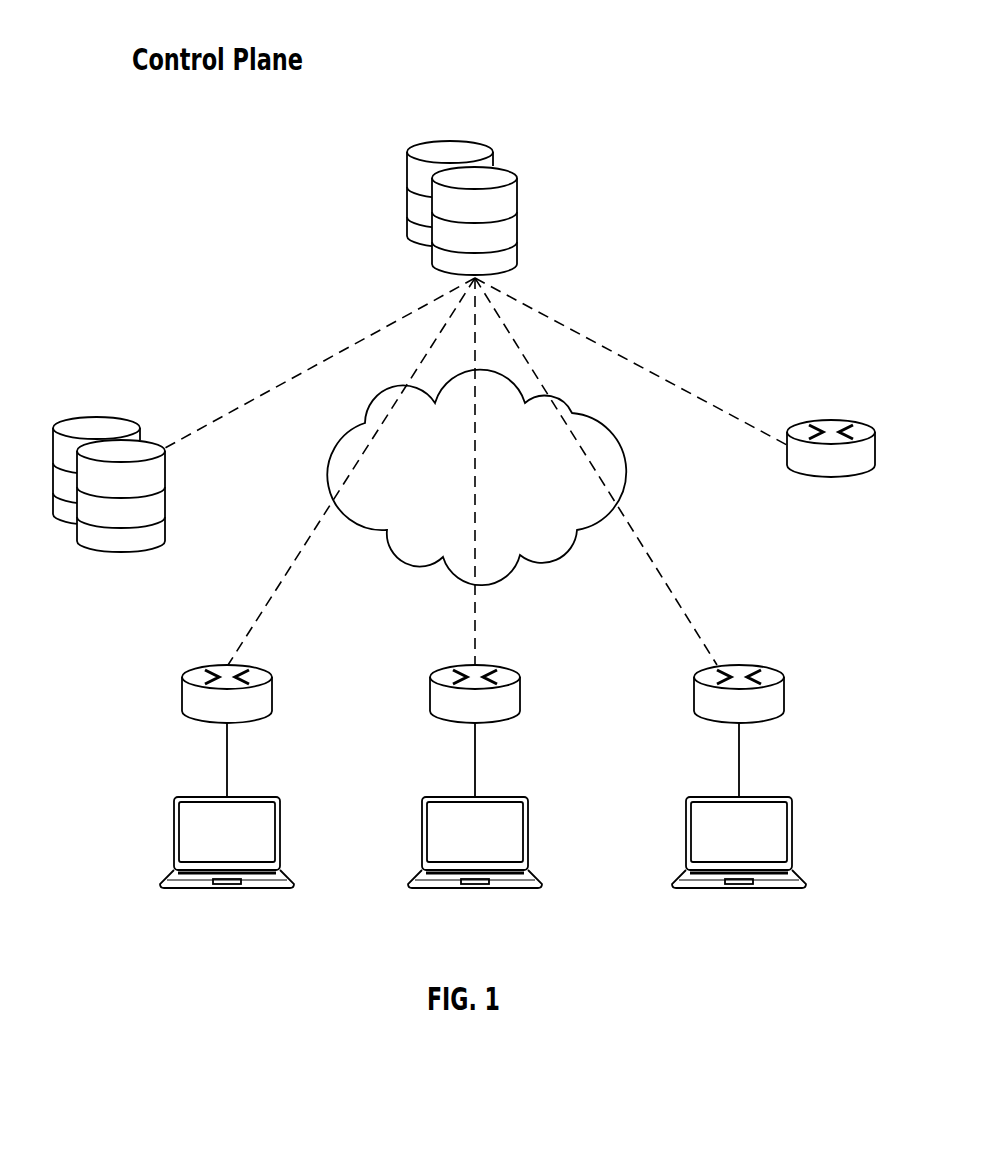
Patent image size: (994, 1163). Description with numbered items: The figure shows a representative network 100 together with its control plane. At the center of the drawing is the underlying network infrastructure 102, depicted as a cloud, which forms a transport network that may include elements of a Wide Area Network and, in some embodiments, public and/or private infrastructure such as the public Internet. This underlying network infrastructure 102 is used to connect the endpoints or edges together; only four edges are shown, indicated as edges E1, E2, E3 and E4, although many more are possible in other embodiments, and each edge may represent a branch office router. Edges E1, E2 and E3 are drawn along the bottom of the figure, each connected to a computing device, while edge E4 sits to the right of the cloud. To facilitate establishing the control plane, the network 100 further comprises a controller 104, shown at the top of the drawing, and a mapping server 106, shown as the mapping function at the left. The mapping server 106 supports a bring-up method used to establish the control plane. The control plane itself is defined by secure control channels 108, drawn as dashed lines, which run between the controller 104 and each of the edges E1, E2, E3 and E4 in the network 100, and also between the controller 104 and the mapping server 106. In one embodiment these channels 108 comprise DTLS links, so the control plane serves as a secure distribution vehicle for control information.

The network 100 is at (137, 141).
The underlying network infrastructure 102 is at (560, 398).
The controller 104 is at (517, 223).
The mapping server 106 is at (165, 497).
The secure control channels 108 is at (318, 360).
The edge E1 is at (182, 697).
The edge E2 is at (432, 697).
The edge E3 is at (695, 697).
The edge E4 is at (840, 420).